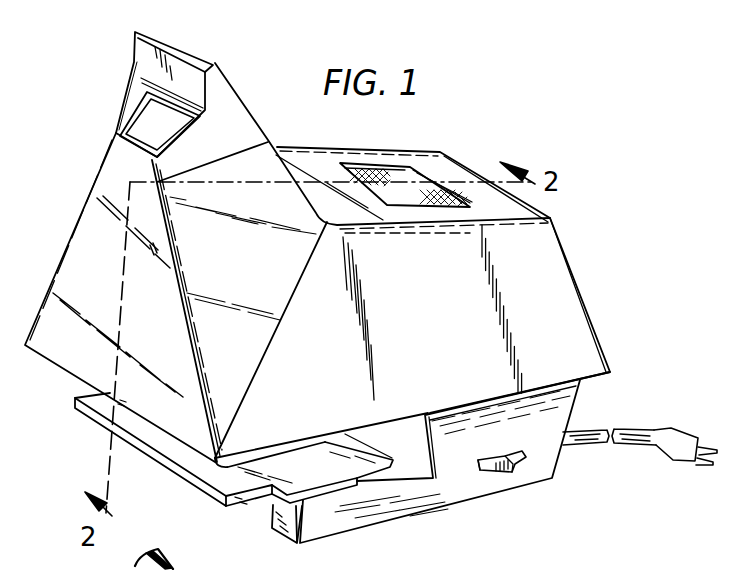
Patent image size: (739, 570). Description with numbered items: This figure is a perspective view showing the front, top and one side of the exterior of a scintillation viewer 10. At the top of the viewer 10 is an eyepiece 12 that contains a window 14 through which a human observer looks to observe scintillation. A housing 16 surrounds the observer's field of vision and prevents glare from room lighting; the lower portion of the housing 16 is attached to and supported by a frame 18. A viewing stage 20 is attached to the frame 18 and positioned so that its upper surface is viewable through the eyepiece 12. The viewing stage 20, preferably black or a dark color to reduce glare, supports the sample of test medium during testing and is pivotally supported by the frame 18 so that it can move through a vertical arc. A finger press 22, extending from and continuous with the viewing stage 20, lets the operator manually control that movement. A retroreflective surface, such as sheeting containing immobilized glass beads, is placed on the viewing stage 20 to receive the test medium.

The viewer 10 is at (338, 141).
The eyepiece 12 is at (150, 58).
The window 14 is at (140, 115).
The housing 16 is at (78, 252).
The frame 18 is at (472, 492).
The viewing stage 20 is at (177, 455).
The finger press 22 is at (323, 487).